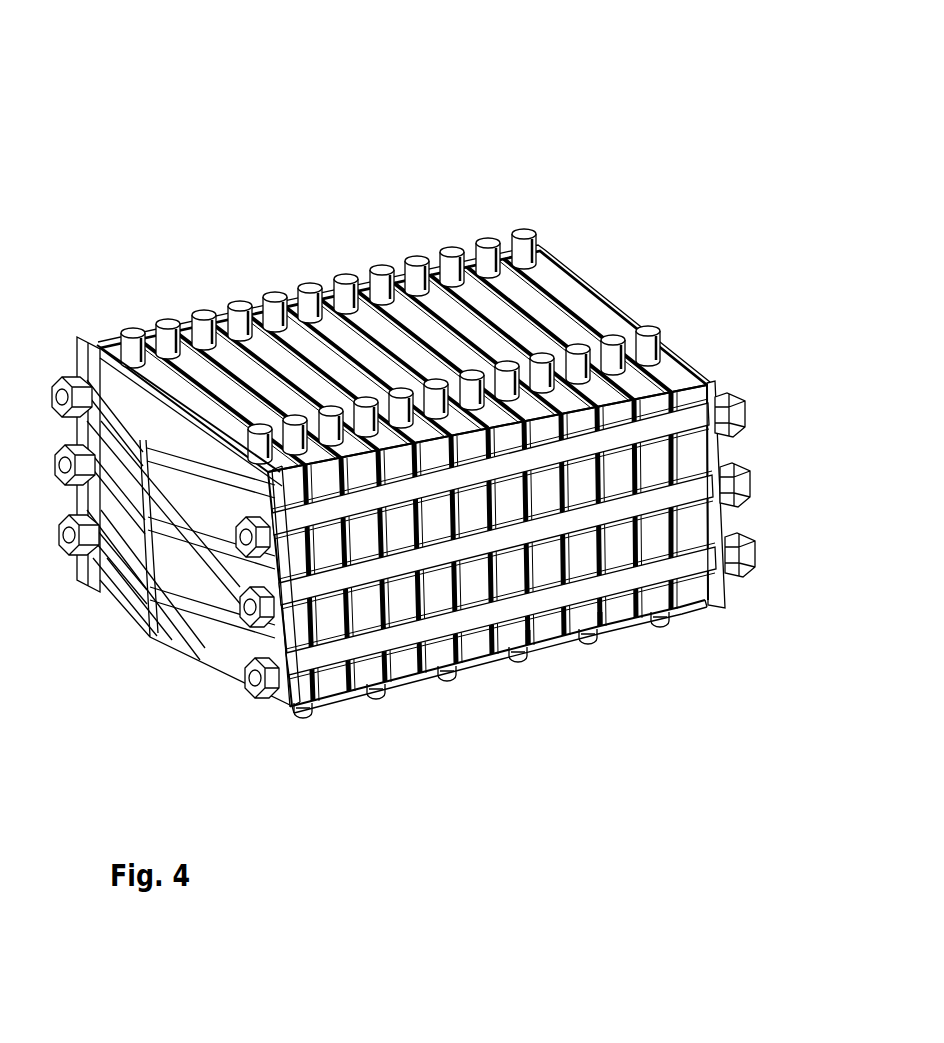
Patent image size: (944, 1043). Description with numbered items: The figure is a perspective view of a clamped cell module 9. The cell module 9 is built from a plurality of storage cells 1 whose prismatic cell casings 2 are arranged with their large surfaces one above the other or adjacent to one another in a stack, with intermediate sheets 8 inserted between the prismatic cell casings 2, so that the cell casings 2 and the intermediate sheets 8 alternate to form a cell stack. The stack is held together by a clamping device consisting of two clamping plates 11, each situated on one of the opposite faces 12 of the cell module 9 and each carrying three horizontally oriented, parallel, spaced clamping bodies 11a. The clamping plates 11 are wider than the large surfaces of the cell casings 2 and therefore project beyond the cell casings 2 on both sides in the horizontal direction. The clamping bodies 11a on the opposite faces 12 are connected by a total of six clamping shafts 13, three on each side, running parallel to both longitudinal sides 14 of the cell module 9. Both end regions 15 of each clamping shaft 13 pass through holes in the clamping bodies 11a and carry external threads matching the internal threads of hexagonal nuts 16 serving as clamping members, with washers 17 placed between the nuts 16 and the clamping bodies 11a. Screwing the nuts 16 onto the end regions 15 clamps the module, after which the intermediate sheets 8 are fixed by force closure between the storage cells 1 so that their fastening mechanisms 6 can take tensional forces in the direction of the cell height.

The storage cell 1 is at (518, 298).
The prismatic cell casing 2 is at (578, 297).
The fastening mechanism 6 is at (517, 670).
The intermediate sheet 8 is at (600, 636).
The cell module 9 is at (253, 140).
The clamping plate 11 is at (237, 473).
The clamping body 11a is at (138, 530).
The face of the cell module 12 is at (703, 378).
The clamping shaft 13 is at (603, 583).
The longitudinal side of the cell module 14 is at (108, 343).
The end region of the clamping shaft 15 is at (262, 612).
The hexagonal nut 16 is at (740, 400).
The washer 17 is at (281, 710).